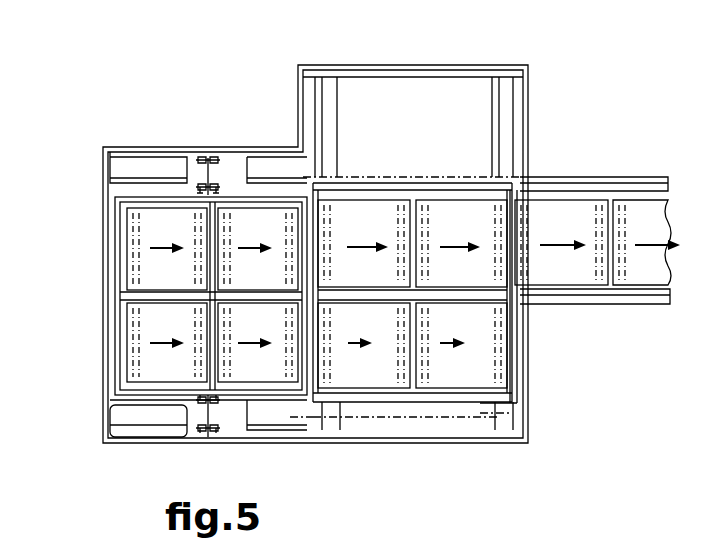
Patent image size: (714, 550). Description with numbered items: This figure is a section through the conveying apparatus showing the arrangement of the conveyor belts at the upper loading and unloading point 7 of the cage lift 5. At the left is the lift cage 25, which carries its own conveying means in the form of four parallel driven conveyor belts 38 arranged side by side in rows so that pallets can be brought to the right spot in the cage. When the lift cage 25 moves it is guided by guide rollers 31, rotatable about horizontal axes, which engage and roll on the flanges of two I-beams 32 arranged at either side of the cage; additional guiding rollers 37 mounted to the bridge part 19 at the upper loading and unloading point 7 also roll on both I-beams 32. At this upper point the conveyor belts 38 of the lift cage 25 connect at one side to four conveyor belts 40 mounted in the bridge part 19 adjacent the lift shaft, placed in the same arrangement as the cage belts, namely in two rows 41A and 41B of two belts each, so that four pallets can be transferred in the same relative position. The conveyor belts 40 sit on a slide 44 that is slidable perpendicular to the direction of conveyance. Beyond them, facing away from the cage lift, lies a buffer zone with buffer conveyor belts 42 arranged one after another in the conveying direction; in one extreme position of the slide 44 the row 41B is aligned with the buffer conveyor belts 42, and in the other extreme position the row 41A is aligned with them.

The cage lift 5 is at (97, 160).
The upper loading and unloading point 7 is at (394, 66).
The bridge part 19 is at (623, 182).
The lift cage 25 is at (130, 348).
The guide rollers 31 is at (202, 188).
The I-beams 32 is at (206, 163).
The guiding rollers 37 is at (226, 162).
The conveyor belts 38 is at (158, 322).
The conveyor belts 40 is at (450, 222).
The row of conveyor belts 41A is at (483, 345).
The row of conveyor belts 41B is at (472, 265).
The buffer conveyor belts 42 is at (573, 218).
The slide 44 is at (380, 188).